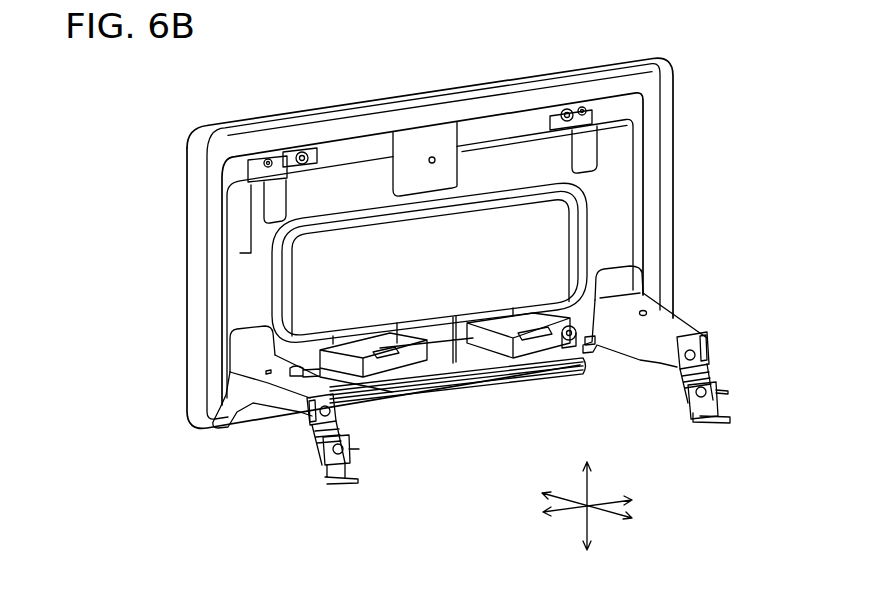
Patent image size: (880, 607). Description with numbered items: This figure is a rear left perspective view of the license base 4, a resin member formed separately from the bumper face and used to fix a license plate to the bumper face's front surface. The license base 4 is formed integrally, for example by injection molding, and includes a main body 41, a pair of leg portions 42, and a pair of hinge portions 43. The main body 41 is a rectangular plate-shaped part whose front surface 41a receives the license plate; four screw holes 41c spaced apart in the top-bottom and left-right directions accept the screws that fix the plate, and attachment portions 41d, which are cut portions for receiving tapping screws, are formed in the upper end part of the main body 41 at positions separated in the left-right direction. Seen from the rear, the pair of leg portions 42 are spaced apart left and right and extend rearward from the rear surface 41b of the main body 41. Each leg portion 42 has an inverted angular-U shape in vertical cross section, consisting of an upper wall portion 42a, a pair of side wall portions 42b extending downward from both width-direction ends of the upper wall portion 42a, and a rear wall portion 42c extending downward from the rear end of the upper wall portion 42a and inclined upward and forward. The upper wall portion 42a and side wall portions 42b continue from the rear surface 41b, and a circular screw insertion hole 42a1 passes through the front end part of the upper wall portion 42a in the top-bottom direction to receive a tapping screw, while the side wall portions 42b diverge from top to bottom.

The license base 4 is at (140, 115).
The main body 41 is at (371, 99).
The front surface 41a is at (186, 200).
The rear surface 41b is at (498, 130).
The screw holes 41c is at (302, 152).
The attachment portions 41d is at (265, 158).
The leg portions 42 is at (277, 419).
The upper wall portion 42a is at (230, 400).
The screw insertion hole 42a1 is at (262, 371).
The side wall portions 42b is at (293, 422).
The rear wall portion 42c is at (334, 417).
The hinge portions 43 is at (352, 446).